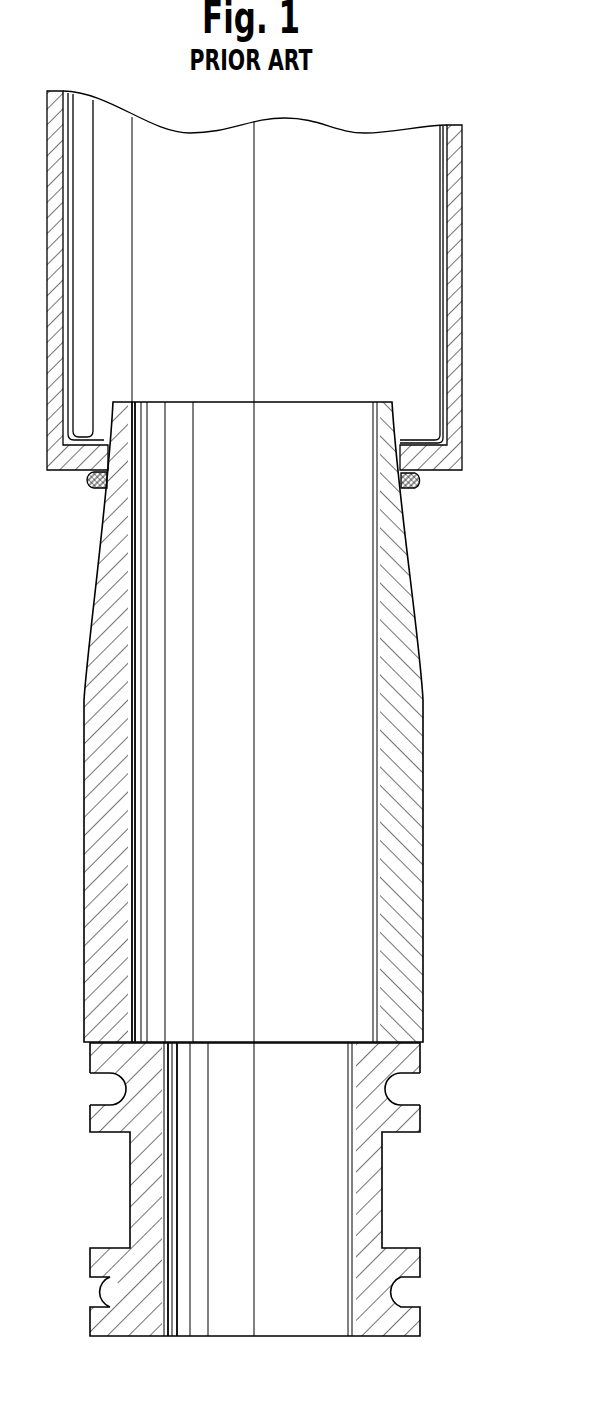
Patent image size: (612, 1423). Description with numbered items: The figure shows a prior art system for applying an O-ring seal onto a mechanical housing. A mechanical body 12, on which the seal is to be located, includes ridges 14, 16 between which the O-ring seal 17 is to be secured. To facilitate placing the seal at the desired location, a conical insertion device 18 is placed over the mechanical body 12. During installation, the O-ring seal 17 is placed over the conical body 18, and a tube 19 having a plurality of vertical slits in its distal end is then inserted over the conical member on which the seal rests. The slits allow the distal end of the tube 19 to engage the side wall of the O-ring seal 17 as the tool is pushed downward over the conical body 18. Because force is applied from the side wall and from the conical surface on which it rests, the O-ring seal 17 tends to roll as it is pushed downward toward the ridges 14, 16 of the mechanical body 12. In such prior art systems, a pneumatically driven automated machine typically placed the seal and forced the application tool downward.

The mechanical body 12 is at (367, 1197).
The ridge 14 is at (402, 1120).
The ridge 16 is at (400, 1061).
The O-ring seal 17 is at (422, 481).
The conical insertion device 18 is at (405, 738).
The tube 19 is at (453, 368).